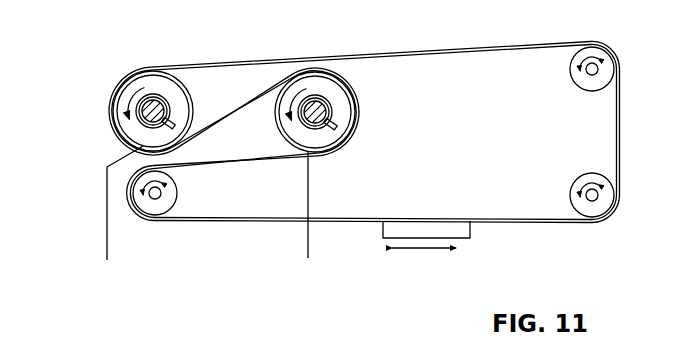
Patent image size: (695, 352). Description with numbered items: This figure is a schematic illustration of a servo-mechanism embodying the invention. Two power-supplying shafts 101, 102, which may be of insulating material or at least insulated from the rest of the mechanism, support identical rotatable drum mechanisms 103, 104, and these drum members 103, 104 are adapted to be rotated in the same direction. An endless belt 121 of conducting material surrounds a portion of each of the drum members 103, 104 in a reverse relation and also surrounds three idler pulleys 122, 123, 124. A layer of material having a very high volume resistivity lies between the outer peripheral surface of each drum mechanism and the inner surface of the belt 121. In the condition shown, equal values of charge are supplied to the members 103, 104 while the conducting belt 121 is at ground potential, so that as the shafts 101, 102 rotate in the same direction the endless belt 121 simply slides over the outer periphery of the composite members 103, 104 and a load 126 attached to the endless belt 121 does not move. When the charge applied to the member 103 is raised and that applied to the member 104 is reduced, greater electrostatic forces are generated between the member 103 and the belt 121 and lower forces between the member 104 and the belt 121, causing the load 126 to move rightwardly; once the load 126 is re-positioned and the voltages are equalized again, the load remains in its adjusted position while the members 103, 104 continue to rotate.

The power-supplying shaft 101 is at (167, 104).
The power-supplying shaft 102 is at (349, 165).
The rotatable drum mechanism 103 is at (138, 158).
The rotatable drum mechanism 104 is at (367, 128).
The endless belt 121 is at (407, 52).
The idler pulley 122 is at (170, 197).
The idler pulley 123 is at (578, 178).
The idler pulley 124 is at (587, 86).
The load 126 is at (470, 231).